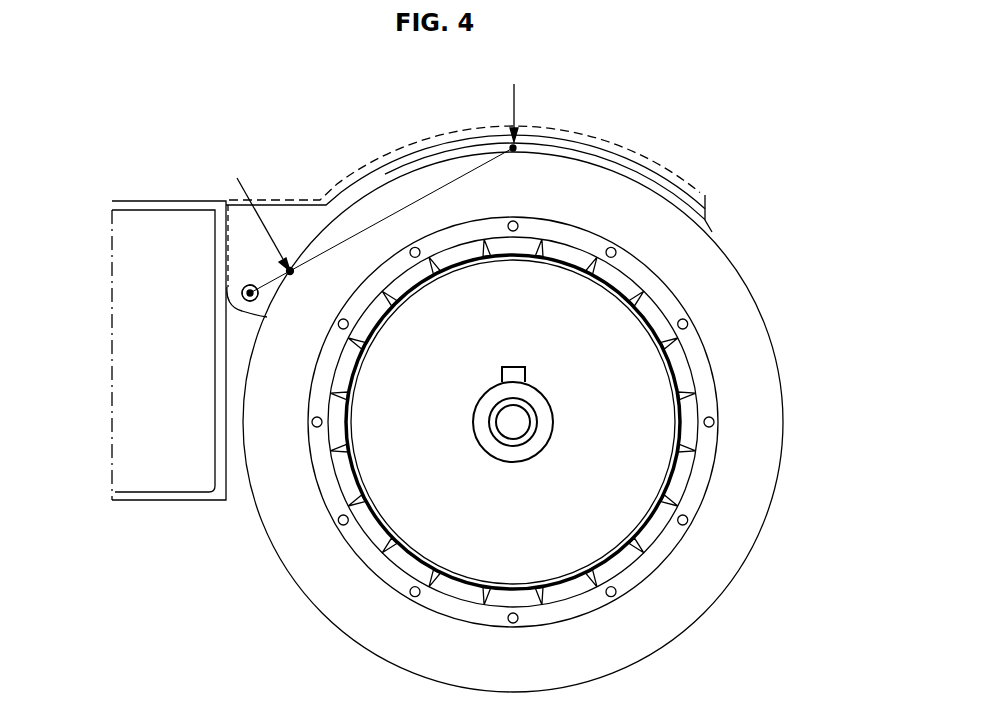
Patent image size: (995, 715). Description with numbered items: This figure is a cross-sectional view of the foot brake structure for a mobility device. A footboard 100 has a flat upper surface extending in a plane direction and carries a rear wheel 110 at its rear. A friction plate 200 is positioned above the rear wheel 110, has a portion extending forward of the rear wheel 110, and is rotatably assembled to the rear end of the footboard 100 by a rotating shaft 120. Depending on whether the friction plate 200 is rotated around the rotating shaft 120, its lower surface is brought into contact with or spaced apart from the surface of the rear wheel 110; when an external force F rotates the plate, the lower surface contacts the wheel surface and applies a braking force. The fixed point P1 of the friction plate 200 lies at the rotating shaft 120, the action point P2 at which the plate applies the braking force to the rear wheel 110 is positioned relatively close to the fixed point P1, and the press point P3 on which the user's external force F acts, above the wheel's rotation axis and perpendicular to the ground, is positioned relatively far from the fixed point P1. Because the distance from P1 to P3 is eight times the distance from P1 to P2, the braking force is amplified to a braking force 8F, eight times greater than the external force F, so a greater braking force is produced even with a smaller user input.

The footboard 100 is at (165, 493).
The rear wheel 110 is at (702, 382).
The rotating shaft 120 is at (242, 293).
The friction plate 200 is at (706, 222).
The fixed point P1 is at (250, 282).
The action point P2 is at (381, 225).
The press point P3 is at (512, 166).
The external force F is at (514, 101).
The braking force 8F is at (250, 211).